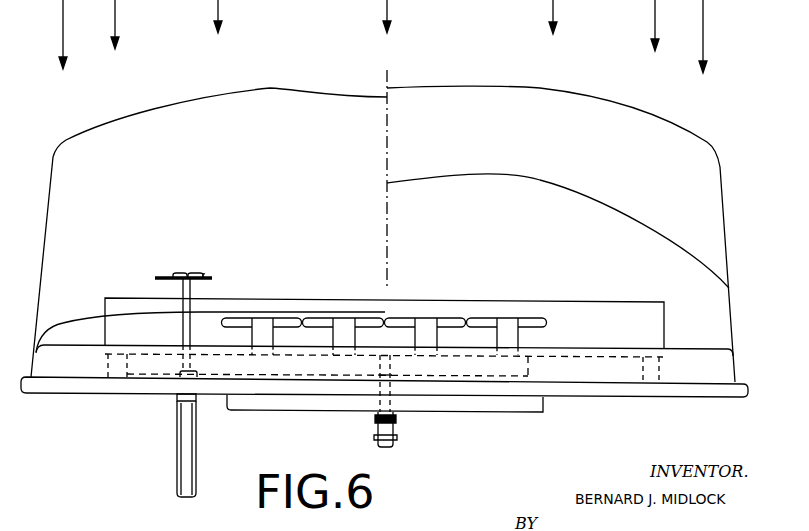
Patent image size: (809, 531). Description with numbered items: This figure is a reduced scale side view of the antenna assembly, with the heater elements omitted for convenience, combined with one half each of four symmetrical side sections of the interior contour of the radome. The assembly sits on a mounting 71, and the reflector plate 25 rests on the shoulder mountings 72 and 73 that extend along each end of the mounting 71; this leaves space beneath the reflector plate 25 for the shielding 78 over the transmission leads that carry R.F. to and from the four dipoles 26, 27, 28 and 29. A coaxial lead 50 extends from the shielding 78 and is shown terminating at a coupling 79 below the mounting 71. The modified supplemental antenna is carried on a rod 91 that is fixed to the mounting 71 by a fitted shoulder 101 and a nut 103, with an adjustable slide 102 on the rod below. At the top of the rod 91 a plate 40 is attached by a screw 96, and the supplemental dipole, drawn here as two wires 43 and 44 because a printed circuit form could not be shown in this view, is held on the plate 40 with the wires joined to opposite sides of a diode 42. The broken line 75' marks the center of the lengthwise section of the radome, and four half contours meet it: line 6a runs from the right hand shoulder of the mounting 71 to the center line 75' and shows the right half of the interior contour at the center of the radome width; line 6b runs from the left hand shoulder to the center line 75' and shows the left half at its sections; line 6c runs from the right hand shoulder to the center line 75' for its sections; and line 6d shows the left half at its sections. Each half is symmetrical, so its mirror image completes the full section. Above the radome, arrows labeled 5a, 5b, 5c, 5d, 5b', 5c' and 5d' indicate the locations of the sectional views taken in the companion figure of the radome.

The section line 5a is at (388, 15).
The section line 5b is at (231, 16).
The section line 5c is at (129, 24).
The section line 5d is at (75, 34).
The section line 5b' is at (568, 17).
The section line 5c' is at (641, 25).
The section line 5d' is at (688, 36).
The half sectional contour line 6a is at (563, 92).
The half sectional contour line 6b is at (258, 93).
The half sectional contour line 6c is at (554, 178).
The half sectional contour line 6d is at (54, 328).
The center line 75' is at (405, 178).
The reflector plate 25 is at (632, 300).
The dipole 26 is at (247, 331).
The dipole 27 is at (333, 331).
The dipole 28 is at (414, 331).
The dipole 29 is at (497, 331).
The rod 91 is at (181, 334).
The dipole wire 43 is at (163, 277).
The plate 40 is at (214, 286).
The screw 96 is at (182, 273).
The diode 42 is at (197, 273).
The dipole wire 44 is at (210, 276).
The shoulder mounting 72 is at (106, 372).
The shielding 78 is at (528, 372).
The shoulder mounting 73 is at (660, 366).
The fitted shoulder 101 is at (192, 375).
The mounting 71 is at (608, 398).
The coaxial lead 50 is at (380, 388).
The nut 103 is at (175, 397).
The adjustable slide 102 is at (197, 450).
The coupling 79 is at (395, 429).